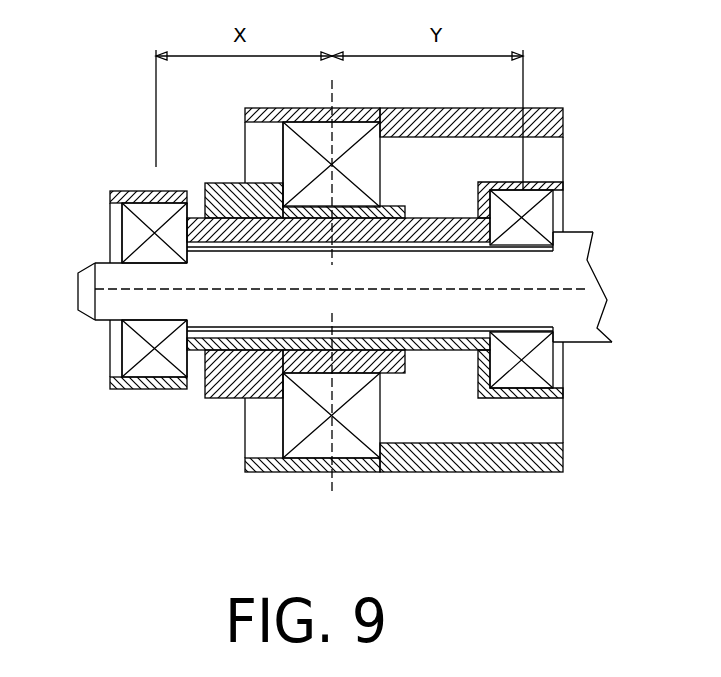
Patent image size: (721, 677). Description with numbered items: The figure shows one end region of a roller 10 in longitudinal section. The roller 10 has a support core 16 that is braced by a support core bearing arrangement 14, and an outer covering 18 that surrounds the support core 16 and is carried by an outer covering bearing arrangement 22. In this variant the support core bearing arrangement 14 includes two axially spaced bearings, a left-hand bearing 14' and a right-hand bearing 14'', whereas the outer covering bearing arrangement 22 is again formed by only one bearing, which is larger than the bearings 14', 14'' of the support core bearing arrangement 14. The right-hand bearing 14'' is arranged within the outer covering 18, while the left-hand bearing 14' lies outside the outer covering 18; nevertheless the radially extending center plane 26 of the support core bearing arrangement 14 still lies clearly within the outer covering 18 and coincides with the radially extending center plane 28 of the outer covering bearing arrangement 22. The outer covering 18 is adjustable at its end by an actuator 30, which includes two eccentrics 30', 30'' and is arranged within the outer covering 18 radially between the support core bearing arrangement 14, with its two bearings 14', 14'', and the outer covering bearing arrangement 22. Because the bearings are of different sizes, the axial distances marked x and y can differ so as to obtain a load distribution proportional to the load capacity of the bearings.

The roller 10 is at (133, 78).
The support core bearing arrangement 14 is at (563, 285).
The left-hand bearing 14' is at (110, 290).
The right-hand bearing 14'' is at (579, 289).
The support core 16 is at (120, 300).
The outer covering 18 is at (460, 450).
The outer covering bearing arrangement 22 is at (350, 135).
The center plane of the support core bearing arrangement 26 is at (236, 397).
The center plane of the outer covering bearing arrangement 28 is at (330, 186).
The actuator 30 is at (466, 166).
The eccentric 30' is at (344, 443).
The eccentric 30'' is at (368, 392).